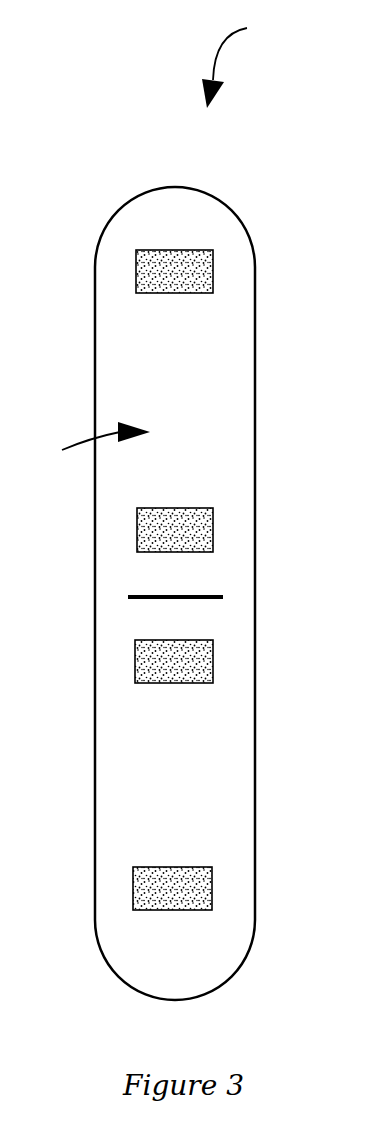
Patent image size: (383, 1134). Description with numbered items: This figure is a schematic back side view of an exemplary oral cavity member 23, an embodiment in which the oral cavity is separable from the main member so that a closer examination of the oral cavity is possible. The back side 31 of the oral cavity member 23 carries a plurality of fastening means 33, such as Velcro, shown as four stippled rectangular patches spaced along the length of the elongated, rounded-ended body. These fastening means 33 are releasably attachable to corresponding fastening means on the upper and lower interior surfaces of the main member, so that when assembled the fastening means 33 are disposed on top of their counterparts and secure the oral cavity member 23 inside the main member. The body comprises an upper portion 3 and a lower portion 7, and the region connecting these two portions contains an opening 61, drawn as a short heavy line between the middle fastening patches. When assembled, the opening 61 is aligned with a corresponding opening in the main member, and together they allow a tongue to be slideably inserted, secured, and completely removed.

The oral cavity member 23 is at (242, 63).
The upper portion 3 is at (198, 347).
The back side 31 is at (86, 450).
The fastening means 33 is at (200, 275).
The opening 61 is at (130, 596).
The lower portion 7 is at (137, 827).